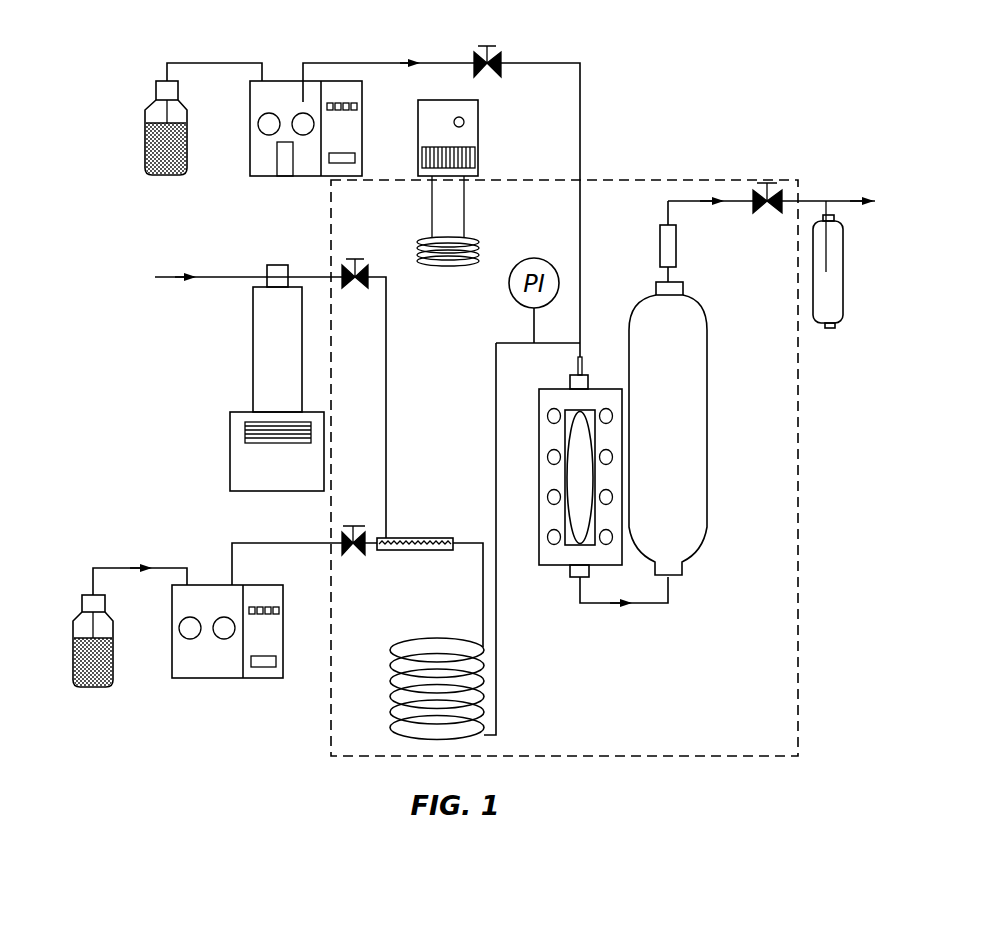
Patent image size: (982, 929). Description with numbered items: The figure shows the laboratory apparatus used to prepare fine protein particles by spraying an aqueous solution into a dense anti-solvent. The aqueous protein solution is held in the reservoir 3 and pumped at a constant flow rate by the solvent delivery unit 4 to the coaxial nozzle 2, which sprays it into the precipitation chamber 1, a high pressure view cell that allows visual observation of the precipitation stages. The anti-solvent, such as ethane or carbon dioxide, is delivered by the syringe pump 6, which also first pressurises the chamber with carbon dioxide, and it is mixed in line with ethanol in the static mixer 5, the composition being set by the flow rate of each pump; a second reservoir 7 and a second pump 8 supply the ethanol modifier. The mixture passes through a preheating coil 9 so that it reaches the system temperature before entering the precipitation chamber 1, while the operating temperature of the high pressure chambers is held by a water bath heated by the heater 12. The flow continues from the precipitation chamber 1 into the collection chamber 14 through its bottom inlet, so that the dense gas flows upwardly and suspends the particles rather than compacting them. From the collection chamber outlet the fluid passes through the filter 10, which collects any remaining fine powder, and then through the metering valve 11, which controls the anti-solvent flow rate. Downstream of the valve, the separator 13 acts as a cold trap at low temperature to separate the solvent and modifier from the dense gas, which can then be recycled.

The precipitation chamber 1 is at (539, 432).
The coaxial nozzle 2 is at (592, 383).
The reservoir 3 is at (145, 149).
The solvent delivery unit 4 is at (285, 81).
The static mixer 5 is at (413, 535).
The syringe pump 6 is at (230, 450).
The second reagent reservoir 7 is at (93, 687).
The second pump 8 is at (208, 678).
The preheating coil 9 is at (392, 723).
The filter 10 is at (676, 247).
The metering valve 11 is at (767, 183).
The heater 12 is at (479, 137).
The separator 13 is at (829, 328).
The collection chamber 14 is at (707, 430).